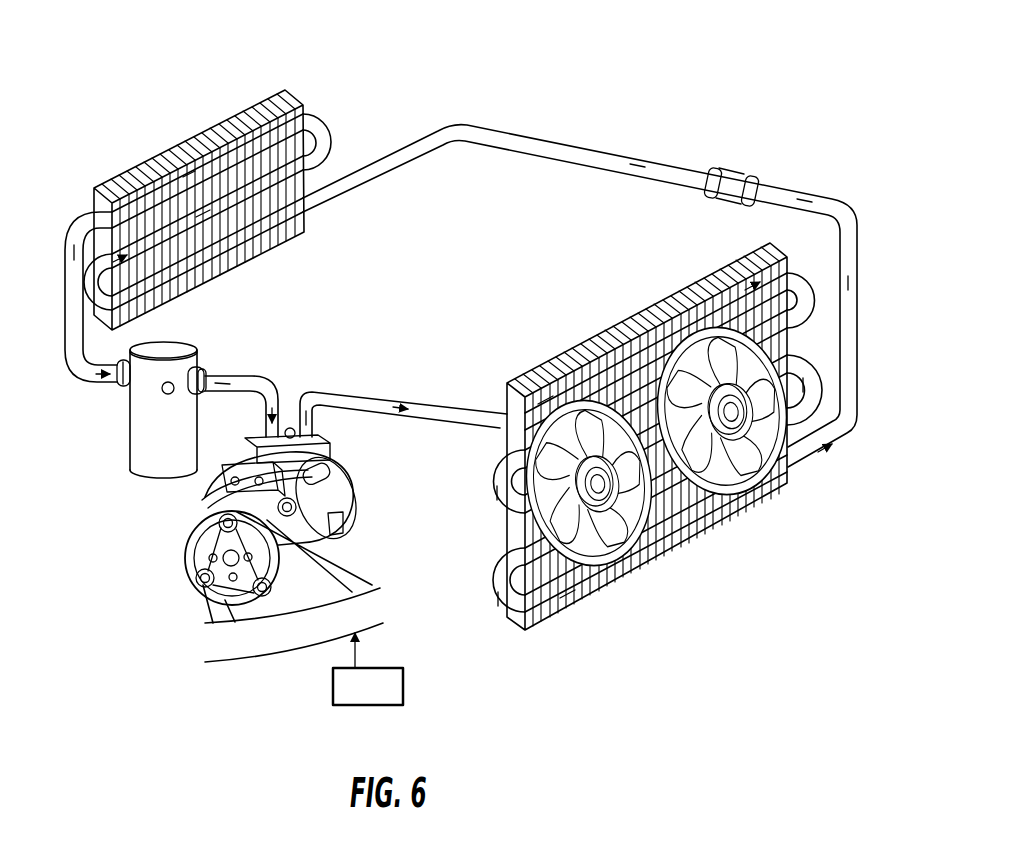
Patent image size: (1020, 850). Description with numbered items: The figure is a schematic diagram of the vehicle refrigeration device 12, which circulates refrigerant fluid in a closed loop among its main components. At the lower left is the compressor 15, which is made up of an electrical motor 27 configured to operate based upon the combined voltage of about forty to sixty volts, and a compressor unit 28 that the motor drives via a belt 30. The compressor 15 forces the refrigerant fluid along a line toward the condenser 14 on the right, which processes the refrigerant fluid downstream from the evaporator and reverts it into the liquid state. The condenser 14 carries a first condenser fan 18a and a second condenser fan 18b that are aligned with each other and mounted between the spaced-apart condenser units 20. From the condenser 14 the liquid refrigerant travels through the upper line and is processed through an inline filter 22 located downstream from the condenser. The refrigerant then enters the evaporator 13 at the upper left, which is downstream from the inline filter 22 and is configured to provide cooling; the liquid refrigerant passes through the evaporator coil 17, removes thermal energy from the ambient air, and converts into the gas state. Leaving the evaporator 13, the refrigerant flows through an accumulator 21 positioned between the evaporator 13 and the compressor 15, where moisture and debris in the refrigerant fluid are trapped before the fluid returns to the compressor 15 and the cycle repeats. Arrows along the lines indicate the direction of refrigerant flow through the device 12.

The vehicle refrigeration device 12 is at (794, 56).
The evaporator 13 is at (205, 124).
The condenser 14 is at (757, 516).
The compressor 15 is at (228, 516).
The evaporator coil 17 is at (291, 102).
The first condenser fan 18a is at (596, 535).
The second condenser fan 18b is at (788, 343).
The refrigerant line 20 is at (774, 247).
The accumulator 21 is at (132, 413).
The inline filter 22 is at (738, 176).
The electrical motor 27 is at (403, 685).
The compressor unit 28 is at (341, 485).
The belt 30 is at (358, 562).